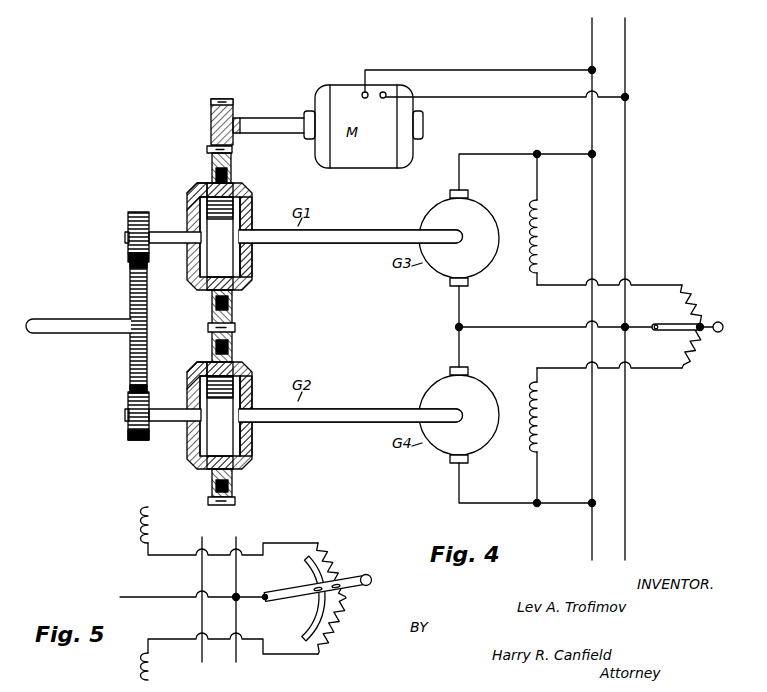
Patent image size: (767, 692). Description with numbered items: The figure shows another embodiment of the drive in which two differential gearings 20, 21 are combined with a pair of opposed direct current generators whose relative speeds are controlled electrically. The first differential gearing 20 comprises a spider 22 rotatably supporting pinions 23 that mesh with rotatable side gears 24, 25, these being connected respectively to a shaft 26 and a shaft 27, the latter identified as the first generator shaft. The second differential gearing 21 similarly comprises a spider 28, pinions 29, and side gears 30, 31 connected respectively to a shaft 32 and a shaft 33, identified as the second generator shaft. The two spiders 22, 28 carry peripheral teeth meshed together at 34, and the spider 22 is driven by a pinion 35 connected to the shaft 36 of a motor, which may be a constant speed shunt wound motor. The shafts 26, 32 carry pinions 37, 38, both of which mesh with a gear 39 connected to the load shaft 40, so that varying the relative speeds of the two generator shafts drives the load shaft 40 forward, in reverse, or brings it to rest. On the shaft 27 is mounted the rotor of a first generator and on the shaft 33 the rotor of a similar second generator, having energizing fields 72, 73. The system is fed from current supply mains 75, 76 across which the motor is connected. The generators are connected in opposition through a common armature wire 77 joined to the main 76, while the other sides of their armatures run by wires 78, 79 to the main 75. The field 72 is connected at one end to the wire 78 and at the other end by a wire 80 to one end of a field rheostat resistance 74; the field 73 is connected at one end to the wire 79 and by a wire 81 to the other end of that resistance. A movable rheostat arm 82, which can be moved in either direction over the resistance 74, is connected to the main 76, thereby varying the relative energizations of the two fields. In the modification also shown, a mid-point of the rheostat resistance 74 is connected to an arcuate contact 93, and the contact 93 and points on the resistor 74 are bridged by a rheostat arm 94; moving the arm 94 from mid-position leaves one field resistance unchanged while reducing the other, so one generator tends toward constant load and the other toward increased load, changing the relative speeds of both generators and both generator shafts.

In FIG. 4, the differential gearing 20 is at (185, 278).
In FIG. 4, the differential gearing 21 is at (183, 394).
In FIG. 4, the spider 22 is at (231, 160).
In FIG. 4, the pinions 23 is at (231, 185).
In FIG. 4, the side gear 24 is at (187, 212).
In FIG. 4, the side gear 25 is at (252, 262).
In FIG. 4, the shaft 26 is at (165, 236).
In FIG. 4, the shaft 27 is at (331, 243).
In FIG. 4, the spider 28 is at (232, 339).
In FIG. 4, the pinions 29 is at (233, 363).
In FIG. 4, the side gear 30 is at (192, 450).
In FIG. 4, the side gear 31 is at (252, 450).
In FIG. 4, the shaft 32 is at (163, 418).
In FIG. 4, the shaft 33 is at (306, 421).
In FIG. 4, the meshing teeth 34 is at (235, 326).
In FIG. 4, the pinion 35 is at (211, 120).
In FIG. 4, the motor shaft 36 is at (273, 130).
In FIG. 4, the pinion 37 is at (128, 213).
In FIG. 4, the pinion 38 is at (128, 432).
In FIG. 4, the gear 39 is at (130, 358).
In FIG. 4, the load shaft 40 is at (96, 334).
In FIG. 4, the energizing field 72 is at (538, 238).
In FIG. 4, the energizing field 73 is at (538, 416).
In FIG. 4, the field rheostat resistance 74 is at (710, 317).
In FIG. 5, the field rheostat resistance 74 is at (338, 632).
In FIG. 4, the current supply main 75 is at (603, 11).
In FIG. 4, the current supply main 76 is at (631, 22).
In FIG. 4, the common armature wire 77 is at (546, 326).
In FIG. 4, the wire 78 is at (500, 156).
In FIG. 4, the wire 79 is at (567, 505).
In FIG. 4, the wire 80 is at (651, 286).
In FIG. 4, the wire 81 is at (657, 380).
In FIG. 4, the movable rheostat arm 82 is at (681, 335).
In FIG. 5, the arcuate contact 93 is at (312, 617).
In FIG. 5, the rheostat arm 94 is at (283, 591).